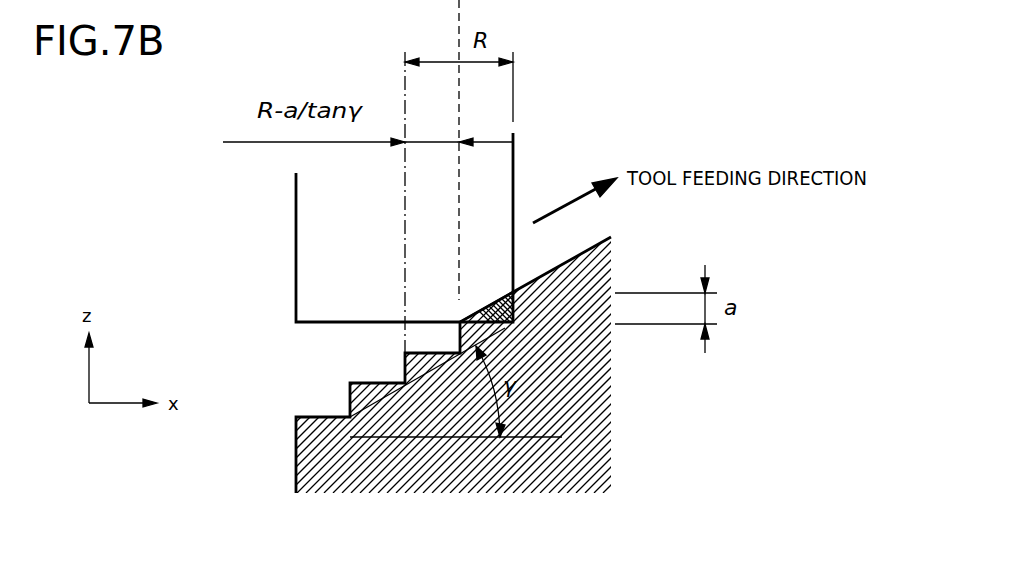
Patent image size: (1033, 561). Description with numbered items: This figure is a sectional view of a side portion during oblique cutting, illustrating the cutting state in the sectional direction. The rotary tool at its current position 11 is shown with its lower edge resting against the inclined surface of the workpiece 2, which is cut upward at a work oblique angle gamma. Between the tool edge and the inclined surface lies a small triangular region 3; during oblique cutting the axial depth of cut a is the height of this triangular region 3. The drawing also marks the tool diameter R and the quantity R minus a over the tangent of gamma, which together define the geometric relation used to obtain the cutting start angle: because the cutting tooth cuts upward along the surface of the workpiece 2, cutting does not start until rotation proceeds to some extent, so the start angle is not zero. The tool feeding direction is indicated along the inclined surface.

The workpiece 2 is at (590, 445).
The removed material (cut portion) 3 is at (513, 312).
The position where the rotary tool is currently disposed 11 is at (513, 157).